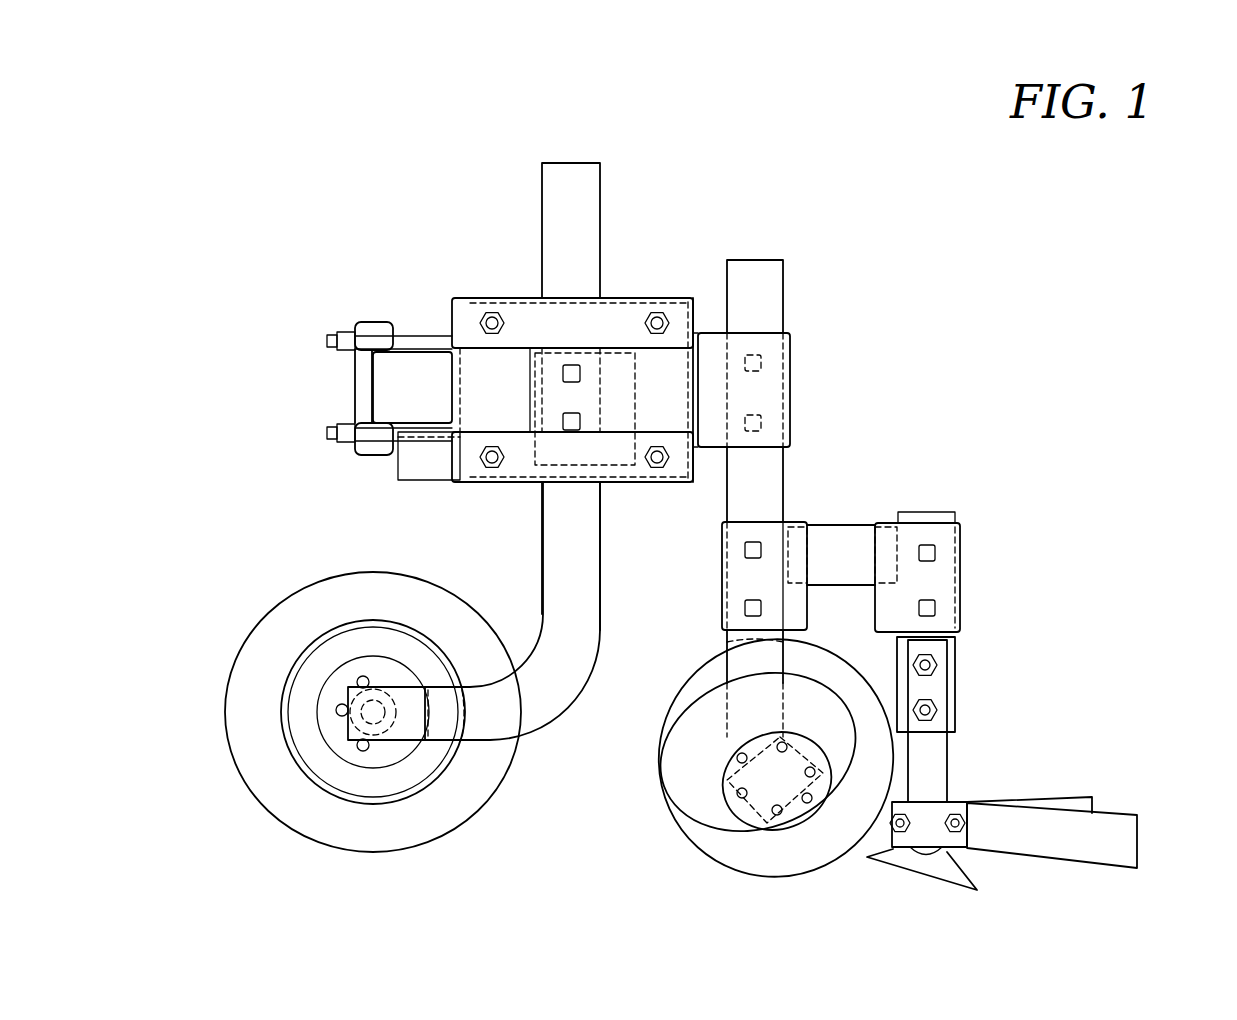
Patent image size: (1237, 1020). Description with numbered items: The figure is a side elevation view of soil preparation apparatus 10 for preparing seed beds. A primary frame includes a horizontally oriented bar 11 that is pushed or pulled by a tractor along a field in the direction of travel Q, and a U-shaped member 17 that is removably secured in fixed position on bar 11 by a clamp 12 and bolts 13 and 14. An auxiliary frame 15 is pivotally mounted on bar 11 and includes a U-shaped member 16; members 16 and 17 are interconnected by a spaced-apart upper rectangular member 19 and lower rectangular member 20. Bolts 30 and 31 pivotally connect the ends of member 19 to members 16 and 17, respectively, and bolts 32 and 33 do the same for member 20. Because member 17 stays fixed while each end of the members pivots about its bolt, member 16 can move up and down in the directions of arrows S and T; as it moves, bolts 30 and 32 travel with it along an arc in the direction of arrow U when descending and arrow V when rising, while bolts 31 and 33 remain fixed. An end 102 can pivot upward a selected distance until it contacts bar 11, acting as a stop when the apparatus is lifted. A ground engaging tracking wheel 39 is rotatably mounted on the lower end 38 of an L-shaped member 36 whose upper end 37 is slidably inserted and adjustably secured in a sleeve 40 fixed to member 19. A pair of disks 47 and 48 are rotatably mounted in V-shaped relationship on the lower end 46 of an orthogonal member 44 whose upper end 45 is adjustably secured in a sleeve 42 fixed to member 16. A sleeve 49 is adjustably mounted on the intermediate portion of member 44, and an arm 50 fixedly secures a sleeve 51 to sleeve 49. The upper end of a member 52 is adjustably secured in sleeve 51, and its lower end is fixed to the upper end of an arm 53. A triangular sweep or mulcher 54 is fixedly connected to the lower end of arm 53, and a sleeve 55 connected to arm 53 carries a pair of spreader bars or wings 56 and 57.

The soil preparation apparatus 10 is at (348, 200).
The horizontally oriented bar 11 is at (447, 403).
The clamp 12 is at (355, 395).
The bolt 13 is at (413, 330).
The bolt 14 is at (332, 442).
The auxiliary frame 15 is at (648, 270).
The U-shaped member 16 is at (670, 390).
The member 17 is at (495, 390).
The upper rectangular member 19 is at (467, 303).
The lower rectangular member 20 is at (593, 477).
The bolt 30 is at (645, 322).
The bolt 31 is at (505, 329).
The bolt 32 is at (672, 457).
The bolt 33 is at (492, 468).
The L-shaped member 36 is at (612, 638).
The upper end of L-shaped member 37 is at (571, 396).
The lower end of L-shaped member 38 is at (426, 713).
The ground engaging tracking wheel 39 is at (276, 593).
The sleeve 40 is at (585, 409).
The sleeve 42 is at (785, 380).
The orthogonal member 44 is at (790, 506).
The upper end of orthogonal member 45 is at (780, 280).
The lower end of orthogonal member 46 is at (740, 662).
The disk 47 is at (663, 700).
The disk 48 is at (682, 780).
The sleeve 49 is at (793, 608).
The arm 50 is at (848, 537).
The sleeve 51 is at (957, 552).
The member 52 is at (955, 650).
The arm 53 is at (938, 743).
The triangular sweep or mulcher 54 is at (937, 877).
The sleeve 55 is at (955, 802).
The spreader bar or wing 56 is at (1080, 800).
The spreader bar or wing 57 is at (1052, 835).
The end 102 is at (432, 468).
The direction of travel Q is at (282, 402).
The upward direction arrow S is at (678, 288).
The downward direction arrow T is at (651, 535).
The downward arc direction arrow U is at (648, 488).
The upward arc direction arrow V is at (622, 287).